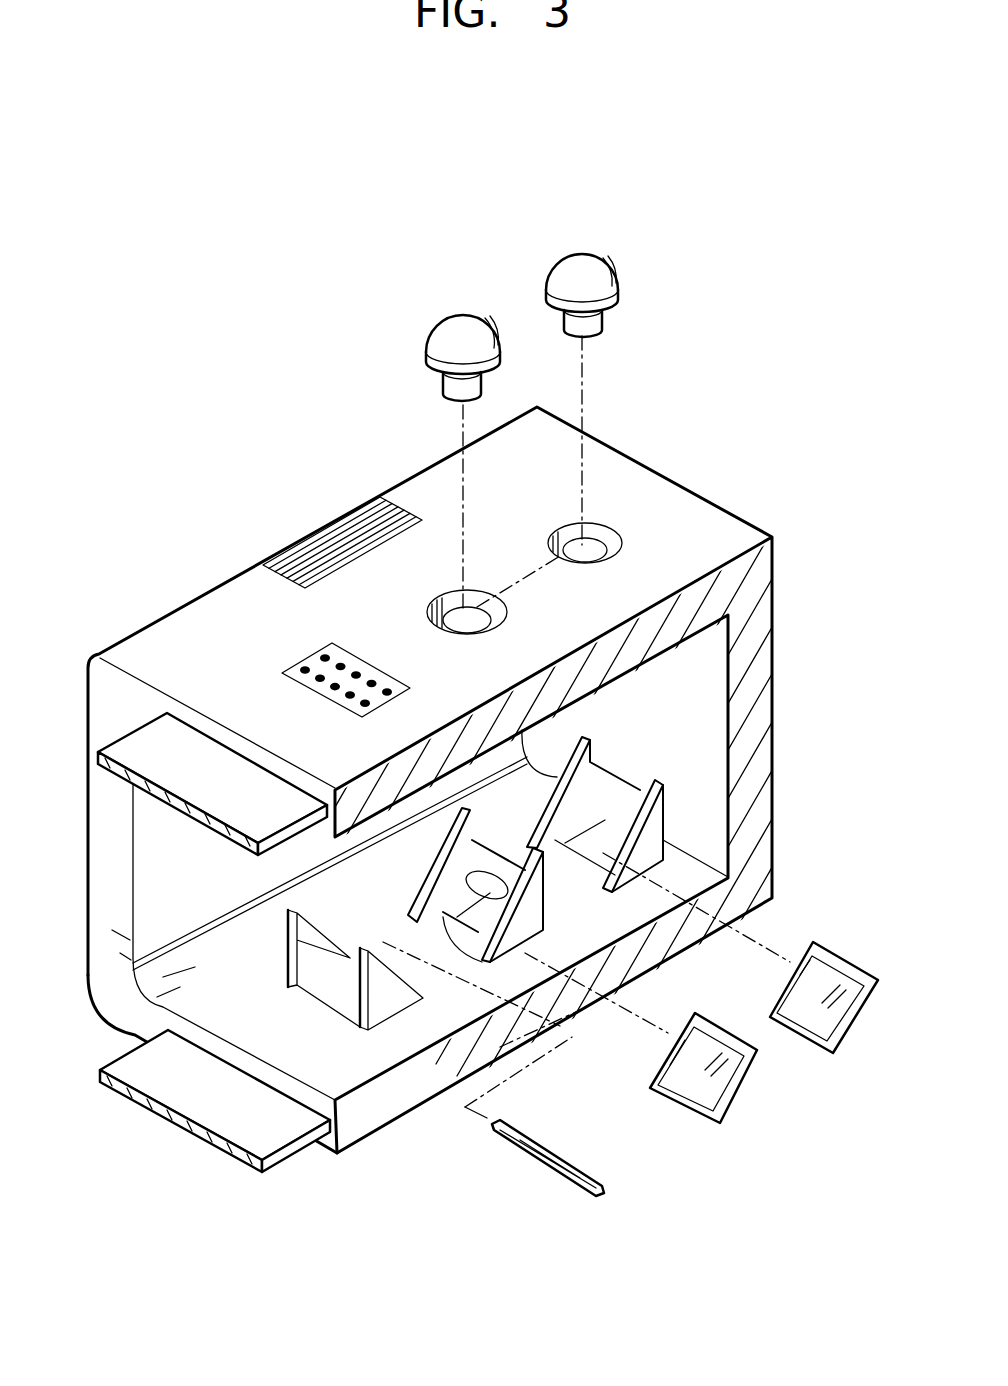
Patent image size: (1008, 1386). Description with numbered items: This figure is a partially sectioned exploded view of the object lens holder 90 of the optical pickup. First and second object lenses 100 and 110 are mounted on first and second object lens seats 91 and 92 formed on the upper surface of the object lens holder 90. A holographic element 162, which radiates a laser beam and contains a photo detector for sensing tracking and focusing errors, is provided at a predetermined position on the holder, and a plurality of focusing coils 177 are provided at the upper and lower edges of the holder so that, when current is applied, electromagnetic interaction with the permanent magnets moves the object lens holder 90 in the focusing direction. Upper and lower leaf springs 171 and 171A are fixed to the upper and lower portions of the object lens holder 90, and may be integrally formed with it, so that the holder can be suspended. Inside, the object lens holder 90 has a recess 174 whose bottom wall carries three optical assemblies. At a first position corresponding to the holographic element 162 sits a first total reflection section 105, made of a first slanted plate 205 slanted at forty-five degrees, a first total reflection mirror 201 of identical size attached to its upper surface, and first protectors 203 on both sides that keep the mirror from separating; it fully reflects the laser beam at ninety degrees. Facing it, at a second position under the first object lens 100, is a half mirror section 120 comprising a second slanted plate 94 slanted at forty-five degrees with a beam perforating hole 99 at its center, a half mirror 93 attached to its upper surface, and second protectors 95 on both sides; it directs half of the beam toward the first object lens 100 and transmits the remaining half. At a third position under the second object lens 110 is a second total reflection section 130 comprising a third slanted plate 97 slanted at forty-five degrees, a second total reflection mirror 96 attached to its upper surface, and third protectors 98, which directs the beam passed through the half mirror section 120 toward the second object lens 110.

The object lens holder 90 is at (745, 679).
The first object lens seat 91 is at (455, 607).
The second object lens seat 92 is at (597, 533).
The half mirror 93 is at (733, 1108).
The second slanted plate 94 is at (505, 870).
The second protectors 95 is at (530, 917).
The second total reflection mirror 96 is at (838, 947).
The third slanted plate 97 is at (680, 812).
The third protectors 98 is at (645, 850).
The beam perforating hole 99 is at (500, 945).
The first object lens 100 is at (462, 308).
The first total reflection section 105 is at (546, 1262).
The second object lens 110 is at (582, 246).
The half mirror section 120 is at (745, 1218).
The second total reflection section 130 is at (864, 795).
The holographic element 162 is at (313, 663).
The upper leaf spring 171 is at (227, 777).
The lower leaf spring 171A is at (160, 1113).
The recess 174 is at (660, 730).
The focusing coils 177 is at (315, 552).
The first total reflection mirror 201 is at (553, 1162).
The first protectors 203 is at (387, 998).
The first slanted plate 205 is at (330, 987).